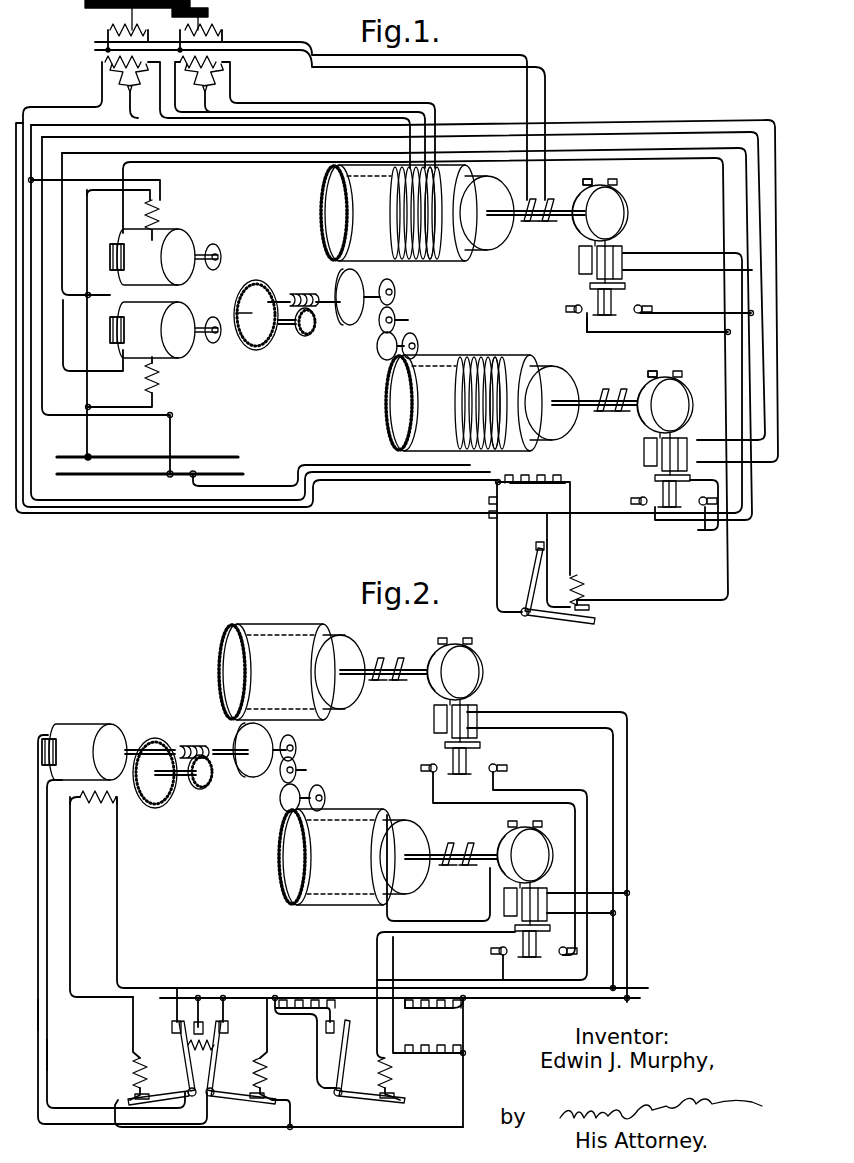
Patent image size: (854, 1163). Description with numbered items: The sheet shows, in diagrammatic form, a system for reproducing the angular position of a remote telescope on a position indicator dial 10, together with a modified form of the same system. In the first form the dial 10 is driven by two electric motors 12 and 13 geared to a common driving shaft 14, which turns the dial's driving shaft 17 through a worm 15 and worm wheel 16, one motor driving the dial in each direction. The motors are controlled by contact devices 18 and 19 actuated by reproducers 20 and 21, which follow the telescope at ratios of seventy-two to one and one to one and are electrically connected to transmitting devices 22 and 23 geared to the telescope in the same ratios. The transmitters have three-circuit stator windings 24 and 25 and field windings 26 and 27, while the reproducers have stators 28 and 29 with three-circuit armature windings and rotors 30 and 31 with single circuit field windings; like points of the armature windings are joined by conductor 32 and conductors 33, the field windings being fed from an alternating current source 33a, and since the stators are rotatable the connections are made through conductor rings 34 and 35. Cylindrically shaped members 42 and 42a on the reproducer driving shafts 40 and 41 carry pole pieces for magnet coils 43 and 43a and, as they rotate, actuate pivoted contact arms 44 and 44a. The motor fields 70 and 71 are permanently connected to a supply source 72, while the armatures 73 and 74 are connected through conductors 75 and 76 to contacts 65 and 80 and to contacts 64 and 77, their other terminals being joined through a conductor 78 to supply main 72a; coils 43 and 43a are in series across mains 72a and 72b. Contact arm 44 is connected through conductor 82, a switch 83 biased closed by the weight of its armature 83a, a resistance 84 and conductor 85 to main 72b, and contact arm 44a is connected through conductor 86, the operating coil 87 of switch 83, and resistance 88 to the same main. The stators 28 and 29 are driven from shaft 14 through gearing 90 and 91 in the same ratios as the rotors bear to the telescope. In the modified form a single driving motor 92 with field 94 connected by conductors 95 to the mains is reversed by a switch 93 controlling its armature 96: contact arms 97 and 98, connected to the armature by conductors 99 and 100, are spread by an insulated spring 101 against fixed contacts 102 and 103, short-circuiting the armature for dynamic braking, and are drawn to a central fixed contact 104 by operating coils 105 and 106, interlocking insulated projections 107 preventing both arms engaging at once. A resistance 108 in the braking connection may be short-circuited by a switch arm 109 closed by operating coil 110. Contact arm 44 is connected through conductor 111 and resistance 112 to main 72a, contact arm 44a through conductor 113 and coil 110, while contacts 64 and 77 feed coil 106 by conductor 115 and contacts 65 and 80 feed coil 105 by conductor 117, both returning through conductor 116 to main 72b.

In FIG. 1, the position indicator dial 10 is at (258, 350).
In FIG. 2, the position indicator dial 10 is at (158, 806).
In FIG. 1, the electric motor 12 is at (178, 240).
In FIG. 1, the electric motor 13 is at (184, 350).
In FIG. 1, the common driving shaft 14 is at (228, 290).
In FIG. 2, the common driving shaft 14 is at (133, 748).
In FIG. 1, the worm 15 is at (292, 294).
In FIG. 1, the worm wheel 16 is at (312, 328).
In FIG. 1, the driving shaft of the dial 17 is at (286, 328).
In FIG. 1, the contact device 18 is at (617, 210).
In FIG. 2, the contact device 18 is at (462, 672).
In FIG. 1, the contact device 19 is at (682, 402).
In FIG. 2, the contact device 19 is at (535, 848).
In FIG. 1, the reproducer 20 is at (490, 200).
In FIG. 2, the reproducer 20 is at (356, 660).
In FIG. 1, the reproducer 21 is at (566, 428).
In FIG. 2, the reproducer 21 is at (412, 868).
In FIG. 1, the transmitting device 22 is at (222, 64).
In FIG. 1, the transmitting device 23 is at (104, 62).
In FIG. 1, the three-circuit stator winding 24 is at (214, 82).
In FIG. 1, the three-circuit stator winding 25 is at (118, 78).
In FIG. 1, the field winding 26 is at (222, 30).
In FIG. 1, the field winding 27 is at (108, 36).
In FIG. 1, the stator 28 is at (470, 256).
In FIG. 1, the stator 29 is at (512, 372).
In FIG. 1, the rotor 30 is at (522, 213).
In FIG. 1, the rotor 31 is at (581, 403).
In FIG. 1, the conductor 32 is at (320, 118).
In FIG. 1, the conductors 33 is at (135, 508).
In FIG. 1, the source of alternating current 33a is at (527, 85).
In FIG. 1, the conductor rings 34 is at (445, 262).
In FIG. 1, the conductor rings 35 is at (500, 360).
In FIG. 1, the driving shaft 40 is at (567, 208).
In FIG. 1, the driving shaft 41 is at (604, 412).
In FIG. 1, the cylindrically shaped member 42 is at (618, 200).
In FIG. 1, the cylindrically shaped member 42a is at (680, 380).
In FIG. 1, the magnet coil 43 is at (624, 262).
In FIG. 1, the magnet coil 43a is at (688, 452).
In FIG. 1, the pivoted contact arm 44 is at (612, 296).
In FIG. 2, the pivoted contact arm 44 is at (470, 762).
In FIG. 1, the pivoted contact arm 44a is at (663, 484).
In FIG. 2, the pivoted contact arm 44a is at (552, 940).
In FIG. 1, the contact 64 is at (640, 318).
In FIG. 2, the contact 64 is at (498, 770).
In FIG. 1, the contact 65 is at (584, 309).
In FIG. 2, the contact 65 is at (425, 776).
In FIG. 1, the field 70 is at (158, 212).
In FIG. 1, the field 71 is at (162, 380).
In FIG. 1, the source of supply 72 is at (160, 464).
In FIG. 1, the supply main 72a is at (92, 457).
In FIG. 2, the supply main 72a is at (640, 988).
In FIG. 1, the supply main 72b is at (226, 474).
In FIG. 2, the supply main 72b is at (640, 1000).
In FIG. 1, the armature 73 is at (114, 244).
In FIG. 1, the armature 74 is at (113, 318).
In FIG. 1, the conductor 75 is at (280, 164).
In FIG. 1, the conductor 76 is at (553, 148).
In FIG. 1, the contact 77 is at (705, 512).
In FIG. 2, the contact 77 is at (575, 954).
In FIG. 1, the conductor 78 is at (82, 374).
In FIG. 1, the contact 80 is at (640, 503).
In FIG. 2, the contact 80 is at (502, 952).
In FIG. 1, the conductor 82 is at (550, 518).
In FIG. 1, the switch 83 is at (540, 574).
In FIG. 1, the armature 83a is at (570, 624).
In FIG. 1, the resistance 84 is at (500, 522).
In FIG. 1, the conductor 85 is at (416, 482).
In FIG. 1, the conductor 86 is at (729, 586).
In FIG. 1, the operating coil 87 is at (585, 585).
In FIG. 1, the resistance 88 is at (540, 484).
In FIG. 1, the gearing 90 is at (338, 272).
In FIG. 1, the gearing 91 is at (377, 352).
In FIG. 2, the driving motor 92 is at (86, 728).
In FIG. 2, the switch 93 is at (200, 1106).
In FIG. 2, the field 94 is at (88, 804).
In FIG. 2, the conductors 95 is at (115, 888).
In FIG. 2, the armature 96 is at (48, 735).
In FIG. 2, the contact arm 97 is at (188, 1056).
In FIG. 2, the contact arm 98 is at (216, 1052).
In FIG. 2, the conductor 99 is at (48, 1068).
In FIG. 2, the conductor 100 is at (39, 1040).
In FIG. 2, the insulated spring 101 is at (186, 1092).
In FIG. 2, the fixed contact 102 is at (173, 1028).
In FIG. 2, the fixed contact 103 is at (229, 1030).
In FIG. 2, the central fixed contact 104 is at (200, 1020).
In FIG. 2, the operating coil 105 is at (133, 1076).
In FIG. 2, the operating coil 106 is at (266, 1072).
In FIG. 2, the interlocking insulated projections 107 is at (212, 1070).
In FIG. 2, the resistance 108 is at (320, 1002).
In FIG. 2, the switch arm 109 is at (340, 1056).
In FIG. 2, the operating coil 110 is at (400, 1070).
In FIG. 2, the conductor 111 is at (458, 918).
In FIG. 2, the resistance 112 is at (420, 1050).
In FIG. 2, the conductor 113 is at (433, 934).
In FIG. 2, the conductor 115 is at (587, 792).
In FIG. 2, the conductor 116 is at (405, 1127).
In FIG. 2, the conductor 117 is at (615, 822).